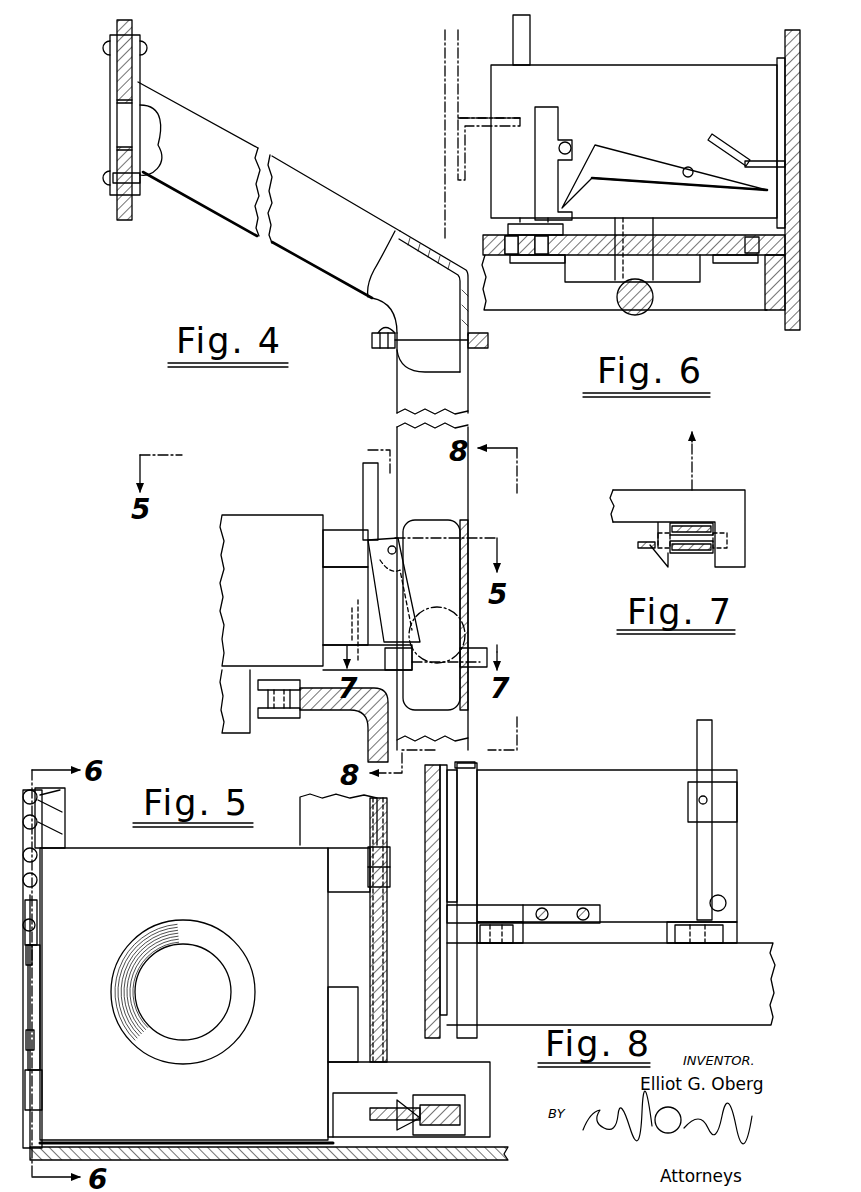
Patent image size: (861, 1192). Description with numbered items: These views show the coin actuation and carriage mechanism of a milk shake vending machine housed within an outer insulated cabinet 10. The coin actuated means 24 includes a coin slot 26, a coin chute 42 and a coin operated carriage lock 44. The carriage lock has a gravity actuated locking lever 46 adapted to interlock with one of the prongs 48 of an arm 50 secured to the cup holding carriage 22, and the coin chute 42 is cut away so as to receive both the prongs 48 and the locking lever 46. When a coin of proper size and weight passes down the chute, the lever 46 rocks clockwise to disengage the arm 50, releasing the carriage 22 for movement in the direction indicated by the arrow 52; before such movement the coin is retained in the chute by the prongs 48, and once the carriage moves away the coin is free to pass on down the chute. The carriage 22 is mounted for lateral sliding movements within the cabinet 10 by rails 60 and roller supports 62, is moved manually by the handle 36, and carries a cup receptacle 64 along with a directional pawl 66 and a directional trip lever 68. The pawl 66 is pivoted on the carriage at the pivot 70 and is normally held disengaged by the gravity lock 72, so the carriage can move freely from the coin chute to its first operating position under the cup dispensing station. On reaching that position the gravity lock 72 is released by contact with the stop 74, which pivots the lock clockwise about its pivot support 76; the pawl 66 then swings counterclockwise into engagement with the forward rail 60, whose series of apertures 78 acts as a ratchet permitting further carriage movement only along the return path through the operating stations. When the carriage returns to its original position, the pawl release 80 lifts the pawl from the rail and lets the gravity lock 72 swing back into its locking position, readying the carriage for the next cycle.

In FIG. 4, the outer insulated cabinet 10 is at (440, 102).
In FIG. 6, the outer insulated cabinet 10 is at (785, 45).
In FIG. 5, the outer insulated cabinet 10 is at (300, 1160).
In FIG. 4, the carriage 22 is at (262, 512).
In FIG. 6, the carriage 22 is at (648, 63).
In FIG. 8, the carriage 22 is at (612, 768).
In FIG. 5, the carriage 22 is at (115, 846).
In FIG. 4, the coin actuated means 24 is at (288, 138).
In FIG. 4, the coin slot 26 is at (112, 132).
In FIG. 6, the handle 36 is at (639, 313).
In FIG. 4, the coin chute 42 is at (460, 398).
In FIG. 7, the coin chute 42 is at (693, 553).
In FIG. 8, the coin chute 42 is at (468, 827).
In FIG. 5, the coin chute 42 is at (470, 1115).
In FIG. 4, the coin operated carriage lock 44 is at (422, 606).
In FIG. 5, the coin operated carriage lock 44 is at (412, 1092).
In FIG. 4, the gravity actuated locking lever 46 is at (372, 612).
In FIG. 7, the gravity actuated locking lever 46 is at (638, 545).
In FIG. 5, the gravity actuated locking lever 46 is at (372, 1114).
In FIG. 4, the prongs 48 is at (472, 650).
In FIG. 7, the prongs 48 is at (660, 562).
In FIG. 7, the arm 50 is at (642, 490).
In FIG. 8, the arm 50 is at (505, 905).
In FIG. 5, the arm 50 is at (485, 1075).
In FIG. 7, the arrow 52 is at (695, 452).
In FIG. 4, the rails 60 is at (332, 706).
In FIG. 6, the rails 60 is at (710, 253).
In FIG. 8, the rails 60 is at (755, 943).
In FIG. 5, the rails 60 is at (305, 812).
In FIG. 4, the roller supports 62 is at (283, 706).
In FIG. 6, the roller supports 62 is at (765, 258).
In FIG. 8, the roller supports 62 is at (688, 920).
In FIG. 5, the cup receptacle 64 is at (243, 1003).
In FIG. 6, the directional pawl 66 is at (641, 155).
In FIG. 5, the directional pawl 66 is at (38, 1005).
In FIG. 4, the directional trip lever 68 is at (365, 505).
In FIG. 6, the directional trip lever 68 is at (530, 40).
In FIG. 8, the directional trip lever 68 is at (712, 750).
In FIG. 5, the directional trip lever 68 is at (370, 878).
In FIG. 6, the pivot 70 is at (688, 167).
In FIG. 5, the pivot 70 is at (38, 1035).
In FIG. 6, the gravity lock 72 is at (535, 195).
In FIG. 5, the gravity lock 72 is at (40, 925).
In FIG. 6, the stop 74 is at (598, 116).
In FIG. 6, the pivot support 76 is at (572, 146).
In FIG. 5, the pivot support 76 is at (36, 966).
In FIG. 6, the apertures 78 is at (537, 264).
In FIG. 5, the apertures 78 is at (35, 848).
In FIG. 6, the pawl release 80 is at (736, 147).
In FIG. 5, the pawl release 80 is at (40, 1090).